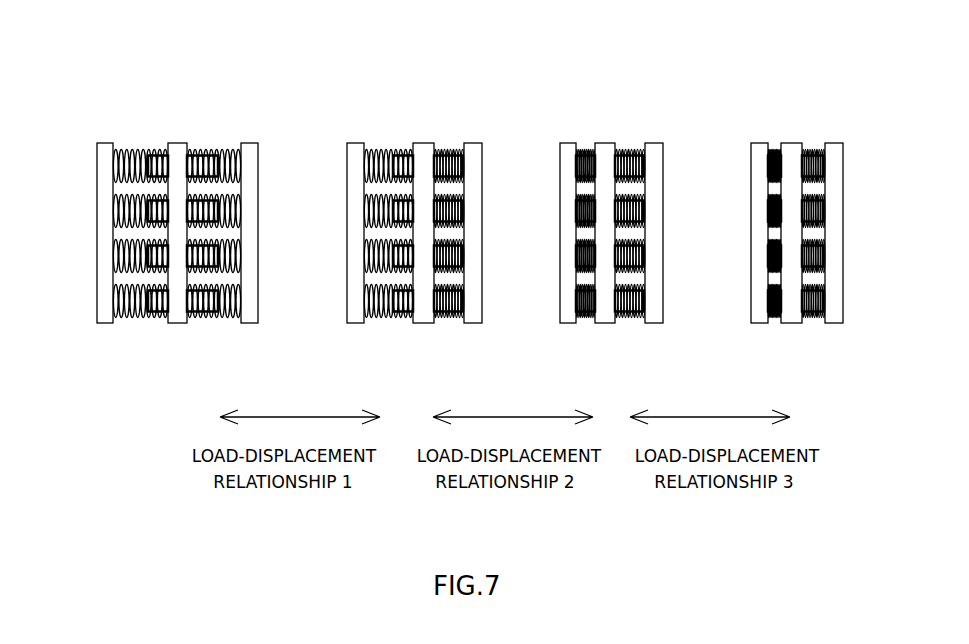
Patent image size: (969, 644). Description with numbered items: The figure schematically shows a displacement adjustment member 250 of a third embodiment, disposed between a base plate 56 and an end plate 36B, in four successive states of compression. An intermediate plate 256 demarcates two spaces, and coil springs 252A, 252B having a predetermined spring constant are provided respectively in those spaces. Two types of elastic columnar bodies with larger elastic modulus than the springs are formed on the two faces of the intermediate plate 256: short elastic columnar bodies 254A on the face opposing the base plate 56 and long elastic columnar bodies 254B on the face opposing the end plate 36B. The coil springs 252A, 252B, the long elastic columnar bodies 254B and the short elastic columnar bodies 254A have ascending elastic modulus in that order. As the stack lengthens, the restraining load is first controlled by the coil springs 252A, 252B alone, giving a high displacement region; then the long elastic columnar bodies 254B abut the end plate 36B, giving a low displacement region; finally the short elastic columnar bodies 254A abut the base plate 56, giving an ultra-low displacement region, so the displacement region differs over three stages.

The displacement adjustment member 250 is at (160, 95).
The base plate 56 is at (96, 165).
The intermediate plate 256 is at (175, 143).
The end plate 36B is at (262, 148).
The coil spring 252A is at (133, 150).
The coil spring 252B is at (220, 150).
The short elastic columnar body 254A is at (155, 322).
The long elastic columnar body 254B is at (195, 308).